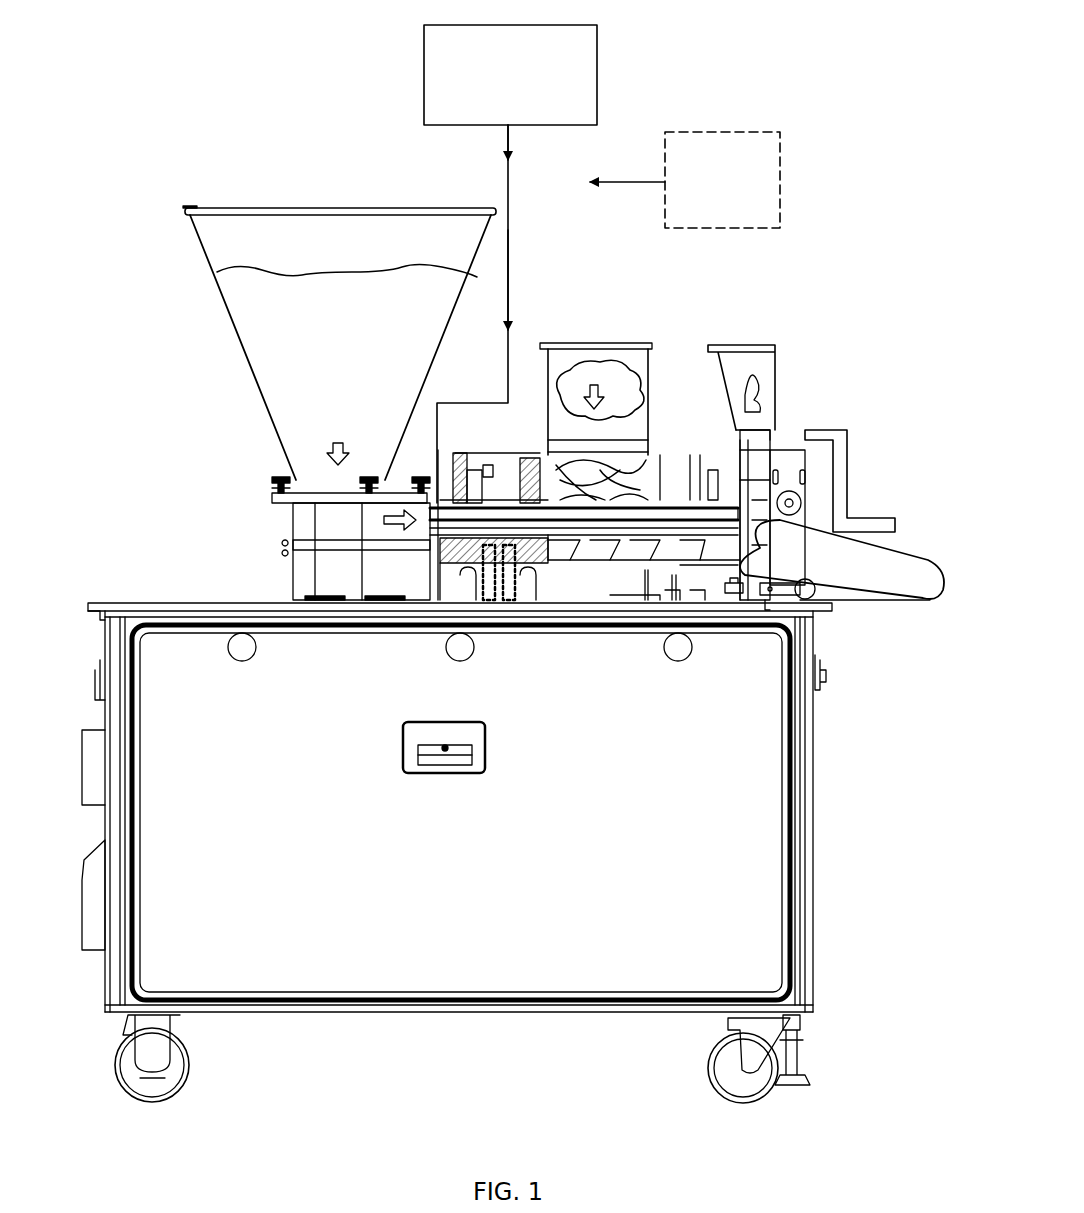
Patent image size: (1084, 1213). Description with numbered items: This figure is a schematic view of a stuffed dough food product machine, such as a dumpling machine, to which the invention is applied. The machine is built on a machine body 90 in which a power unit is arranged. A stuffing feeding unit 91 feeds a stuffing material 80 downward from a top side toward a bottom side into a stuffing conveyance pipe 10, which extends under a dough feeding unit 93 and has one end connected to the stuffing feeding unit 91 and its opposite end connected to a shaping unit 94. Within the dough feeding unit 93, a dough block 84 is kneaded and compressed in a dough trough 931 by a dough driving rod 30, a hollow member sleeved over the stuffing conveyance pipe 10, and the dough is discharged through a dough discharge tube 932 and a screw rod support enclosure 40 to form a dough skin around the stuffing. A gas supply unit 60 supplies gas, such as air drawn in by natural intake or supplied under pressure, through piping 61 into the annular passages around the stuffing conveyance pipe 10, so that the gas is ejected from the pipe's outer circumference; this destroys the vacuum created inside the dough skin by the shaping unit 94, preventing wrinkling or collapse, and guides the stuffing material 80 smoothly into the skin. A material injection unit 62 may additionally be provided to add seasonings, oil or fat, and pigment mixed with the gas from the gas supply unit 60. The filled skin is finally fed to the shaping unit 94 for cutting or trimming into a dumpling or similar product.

The stuffing conveyance pipe 10 is at (630, 520).
The dough driving rod 30 is at (572, 550).
The screw rod support enclosure 40 is at (715, 575).
The gas supply unit 60 is at (587, 46).
The piping 61 is at (510, 226).
The material injection unit 62 is at (778, 161).
The stuffing material 80 is at (248, 338).
The dough block 84 is at (618, 395).
The machine body 90 is at (142, 592).
The stuffing feeding unit 91 is at (248, 459).
The dough feeding unit 93 is at (623, 342).
The dough trough 931 is at (656, 450).
The dough discharge tube 932 is at (688, 575).
The shaping unit 94 is at (847, 423).